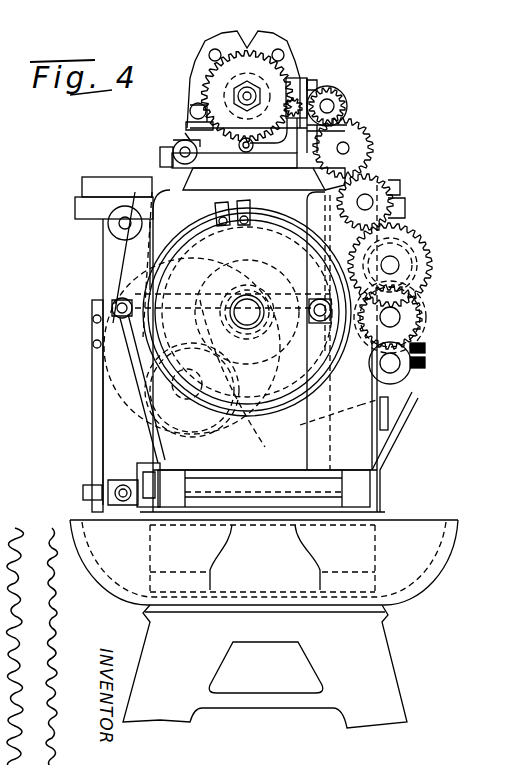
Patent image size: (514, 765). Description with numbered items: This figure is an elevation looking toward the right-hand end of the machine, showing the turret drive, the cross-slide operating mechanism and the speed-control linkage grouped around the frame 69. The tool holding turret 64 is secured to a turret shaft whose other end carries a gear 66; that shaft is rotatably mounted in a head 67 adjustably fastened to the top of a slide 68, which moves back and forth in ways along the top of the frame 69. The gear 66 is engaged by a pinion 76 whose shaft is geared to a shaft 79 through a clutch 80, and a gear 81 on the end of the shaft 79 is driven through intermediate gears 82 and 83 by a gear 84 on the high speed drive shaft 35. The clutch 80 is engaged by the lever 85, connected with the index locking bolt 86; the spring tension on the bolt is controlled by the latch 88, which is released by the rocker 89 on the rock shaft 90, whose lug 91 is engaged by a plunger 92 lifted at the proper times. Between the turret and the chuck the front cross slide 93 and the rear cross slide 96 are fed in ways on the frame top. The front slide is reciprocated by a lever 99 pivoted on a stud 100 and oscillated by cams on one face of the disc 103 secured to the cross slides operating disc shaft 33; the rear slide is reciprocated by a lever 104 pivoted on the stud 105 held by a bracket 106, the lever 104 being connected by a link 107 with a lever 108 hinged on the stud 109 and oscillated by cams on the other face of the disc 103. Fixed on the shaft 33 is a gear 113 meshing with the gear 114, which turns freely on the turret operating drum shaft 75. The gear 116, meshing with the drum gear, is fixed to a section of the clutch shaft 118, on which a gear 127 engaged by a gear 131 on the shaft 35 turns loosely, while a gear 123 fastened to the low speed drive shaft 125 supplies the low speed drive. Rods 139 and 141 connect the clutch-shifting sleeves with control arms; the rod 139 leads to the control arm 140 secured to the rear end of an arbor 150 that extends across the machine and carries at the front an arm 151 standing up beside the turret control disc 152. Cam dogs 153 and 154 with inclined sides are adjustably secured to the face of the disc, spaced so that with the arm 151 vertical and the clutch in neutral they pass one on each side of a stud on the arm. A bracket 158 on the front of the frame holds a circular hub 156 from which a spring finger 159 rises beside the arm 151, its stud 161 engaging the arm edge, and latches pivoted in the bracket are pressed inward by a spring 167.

The cross-slides operating disc shaft 33 is at (195, 384).
The high speed drive shaft 35 is at (399, 265).
The tool holding turret 64 is at (192, 68).
The gear 66 is at (246, 52).
The head 67 is at (234, 161).
The slide 68 is at (254, 179).
The frame 69 is at (265, 345).
The turret operating drum shaft 75 is at (252, 294).
The pinion 76 is at (300, 78).
The shaft 79 is at (343, 96).
The clutch 80 is at (330, 86).
The gear 81 is at (334, 105).
The intermediate gear 82 is at (372, 134).
The intermediate gear 83 is at (378, 188).
The gear 84 is at (428, 240).
The lever 85 is at (305, 176).
The index locking bolt 86 is at (293, 141).
The latch 88 is at (190, 105).
The rocker 89 is at (187, 134).
The rock shaft 90 is at (185, 140).
The lug 91 is at (160, 152).
The plunger 92 is at (173, 155).
The front cross slide 93 is at (114, 198).
The rear cross slide 96 is at (402, 192).
The lever 99 is at (104, 263).
The stud 100 is at (114, 300).
The disc 103 is at (255, 440).
The lever 104 is at (300, 228).
The stud 105 is at (318, 406).
The bracket 106 is at (372, 421).
The link 107 is at (232, 290).
The lever 108 is at (110, 240).
The stud 109 is at (110, 225).
The gear 113 is at (243, 433).
The gear 114 is at (230, 272).
The gear 116 is at (420, 305).
The clutch shaft 118 is at (400, 317).
The gear 123 is at (395, 396).
The low speed drive shaft 125 is at (408, 376).
The gear 127 is at (412, 340).
The gear 131 is at (418, 258).
The rod 139 is at (426, 348).
The control arm 140 is at (386, 458).
The rod 141 is at (426, 363).
The arbor 150 is at (264, 488).
The arm 151 is at (158, 458).
The turret control disc 152 is at (251, 373).
The cam dog 153 is at (312, 196).
The cam dog 154 is at (214, 208).
The circular hub 156 is at (88, 485).
The bracket 158 is at (95, 456).
The spring finger 159 is at (108, 445).
The stud 161 is at (93, 318).
The spring 167 is at (93, 343).